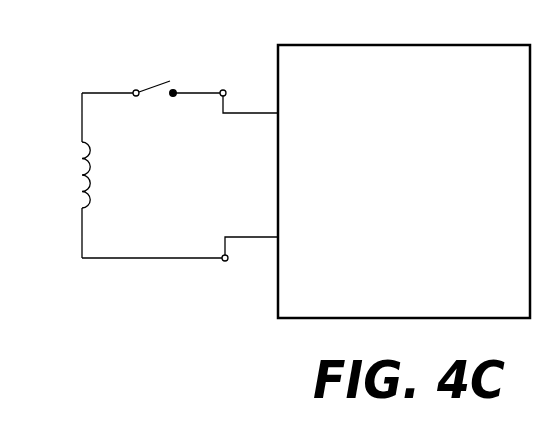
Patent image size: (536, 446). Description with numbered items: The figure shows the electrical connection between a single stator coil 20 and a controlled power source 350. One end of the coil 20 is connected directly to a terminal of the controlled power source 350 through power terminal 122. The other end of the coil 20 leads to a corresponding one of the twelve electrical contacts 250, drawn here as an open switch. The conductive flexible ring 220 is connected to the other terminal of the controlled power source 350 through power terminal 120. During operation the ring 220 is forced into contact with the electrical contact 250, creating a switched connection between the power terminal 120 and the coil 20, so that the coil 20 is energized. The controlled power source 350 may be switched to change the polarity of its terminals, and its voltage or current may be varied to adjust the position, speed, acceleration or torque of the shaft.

The coil 20 is at (90, 176).
The electrical contact 250 is at (133, 91).
The conductive flexible ring 220 is at (173, 96).
The power terminal 120 is at (224, 90).
The power terminal 122 is at (225, 261).
The controlled power source 350 is at (423, 45).